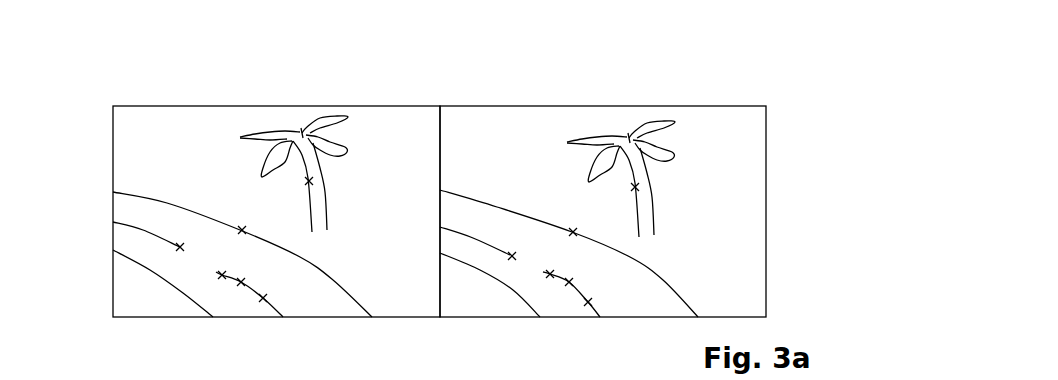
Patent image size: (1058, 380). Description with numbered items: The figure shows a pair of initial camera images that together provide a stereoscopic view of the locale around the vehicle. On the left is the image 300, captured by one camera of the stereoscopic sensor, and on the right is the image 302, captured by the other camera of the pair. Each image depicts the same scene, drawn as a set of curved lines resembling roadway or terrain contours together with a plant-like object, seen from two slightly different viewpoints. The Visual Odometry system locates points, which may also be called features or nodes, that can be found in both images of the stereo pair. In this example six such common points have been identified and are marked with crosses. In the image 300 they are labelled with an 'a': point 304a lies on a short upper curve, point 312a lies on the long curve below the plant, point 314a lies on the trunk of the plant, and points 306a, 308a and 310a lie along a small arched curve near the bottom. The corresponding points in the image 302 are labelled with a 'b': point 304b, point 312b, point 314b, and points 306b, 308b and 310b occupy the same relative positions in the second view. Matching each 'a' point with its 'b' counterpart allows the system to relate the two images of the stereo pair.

The image 300 is at (223, 112).
The image 302 is at (475, 110).
The point 304a is at (180, 247).
The point 304b is at (512, 256).
The point 306a is at (222, 275).
The point 306b is at (550, 274).
The point 308a is at (241, 282).
The point 308b is at (569, 282).
The point 310a is at (263, 298).
The point 310b is at (588, 302).
The point 312a is at (242, 230).
The point 312b is at (573, 232).
The point 314a is at (309, 181).
The point 314b is at (635, 187).